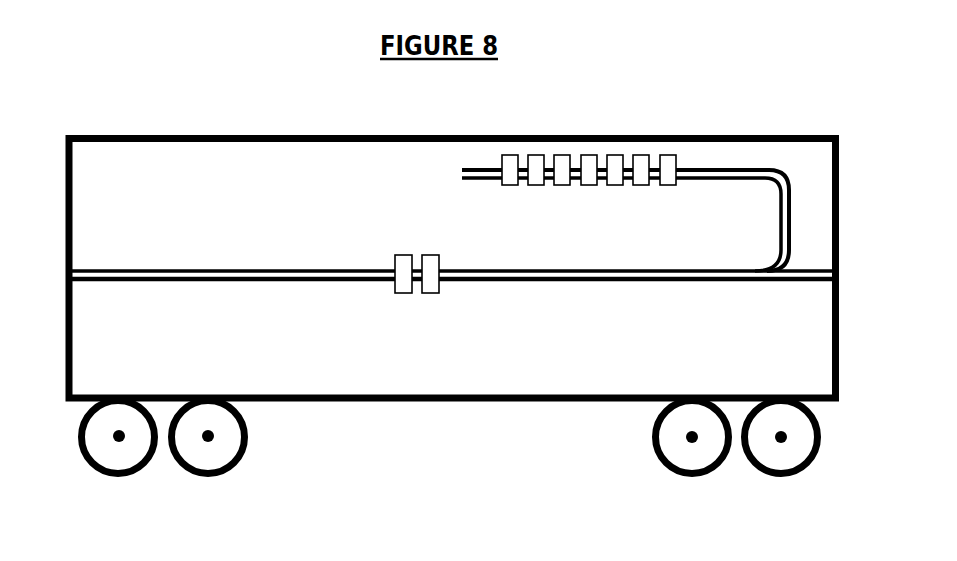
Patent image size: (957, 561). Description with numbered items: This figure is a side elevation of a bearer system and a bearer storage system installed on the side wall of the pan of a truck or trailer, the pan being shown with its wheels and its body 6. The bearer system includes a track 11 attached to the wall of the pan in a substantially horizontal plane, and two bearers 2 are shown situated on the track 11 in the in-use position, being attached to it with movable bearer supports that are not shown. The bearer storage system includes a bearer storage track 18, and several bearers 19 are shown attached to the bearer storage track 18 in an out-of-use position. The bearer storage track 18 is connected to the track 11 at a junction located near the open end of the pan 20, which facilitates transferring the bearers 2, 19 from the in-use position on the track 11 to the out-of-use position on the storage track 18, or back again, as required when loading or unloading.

The vehicle body / container 6 is at (620, 136).
The track 11 is at (590, 285).
The bearer storage track 18 is at (732, 178).
The bearers 19 is at (565, 175).
The bearers 2 is at (406, 293).
The open end of the pan 20 is at (840, 257).